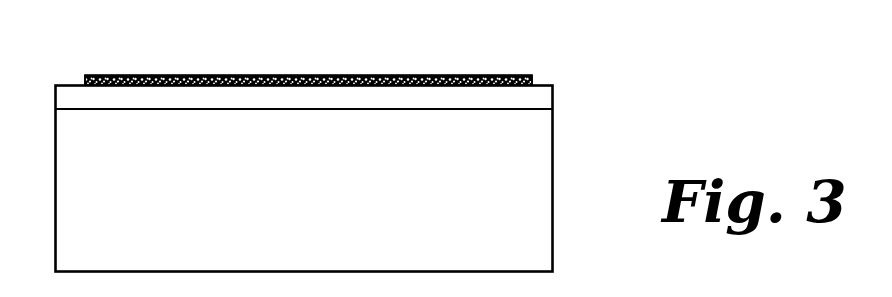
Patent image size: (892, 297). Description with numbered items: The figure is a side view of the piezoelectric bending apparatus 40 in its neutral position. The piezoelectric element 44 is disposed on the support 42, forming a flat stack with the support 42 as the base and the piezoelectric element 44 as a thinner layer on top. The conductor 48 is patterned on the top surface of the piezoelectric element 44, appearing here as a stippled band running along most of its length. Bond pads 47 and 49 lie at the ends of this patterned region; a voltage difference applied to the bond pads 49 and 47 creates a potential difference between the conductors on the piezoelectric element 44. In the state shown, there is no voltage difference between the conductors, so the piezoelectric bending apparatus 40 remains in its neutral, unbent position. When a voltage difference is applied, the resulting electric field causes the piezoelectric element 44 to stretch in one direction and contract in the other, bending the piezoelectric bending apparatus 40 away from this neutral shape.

The piezoelectric bending apparatus 40 is at (583, 63).
The support 42 is at (553, 199).
The piezoelectric element 44 is at (553, 93).
The bond pad 47 is at (95, 73).
The conductor 48 is at (293, 75).
The bond pad 49 is at (498, 75).